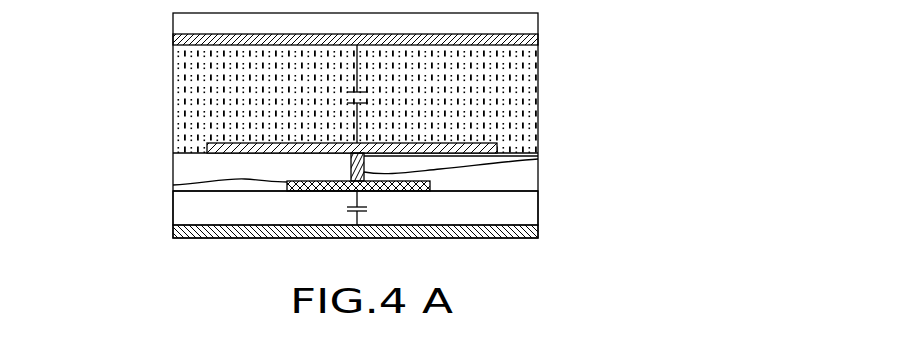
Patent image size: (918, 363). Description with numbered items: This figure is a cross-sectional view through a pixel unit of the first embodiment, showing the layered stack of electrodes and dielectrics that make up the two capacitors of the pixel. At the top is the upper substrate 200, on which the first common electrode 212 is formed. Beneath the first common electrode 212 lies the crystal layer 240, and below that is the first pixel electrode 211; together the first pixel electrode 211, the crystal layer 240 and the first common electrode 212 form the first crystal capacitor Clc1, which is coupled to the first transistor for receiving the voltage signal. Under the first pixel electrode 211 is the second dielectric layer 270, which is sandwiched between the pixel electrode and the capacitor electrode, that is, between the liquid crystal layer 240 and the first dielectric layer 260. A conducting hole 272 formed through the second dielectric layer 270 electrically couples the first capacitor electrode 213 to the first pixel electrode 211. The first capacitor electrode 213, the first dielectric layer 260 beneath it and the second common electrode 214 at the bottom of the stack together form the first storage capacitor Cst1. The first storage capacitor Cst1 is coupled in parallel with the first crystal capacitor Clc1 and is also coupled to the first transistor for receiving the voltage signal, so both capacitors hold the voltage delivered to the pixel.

The upper substrate 200 is at (533, 25).
The crystal layer 240 is at (533, 93).
The first common electrode 212 is at (173, 40).
The first pixel electrode 211 is at (207, 145).
The first capacitor electrode 213 is at (173, 185).
The second common electrode 214 is at (173, 231).
The conducting hole 272 is at (538, 160).
The second dielectric layer 270 is at (538, 183).
The first dielectric layer 260 is at (538, 214).
The first crystal capacitor Clc1 is at (378, 94).
The first storage capacitor Cst1 is at (377, 208).